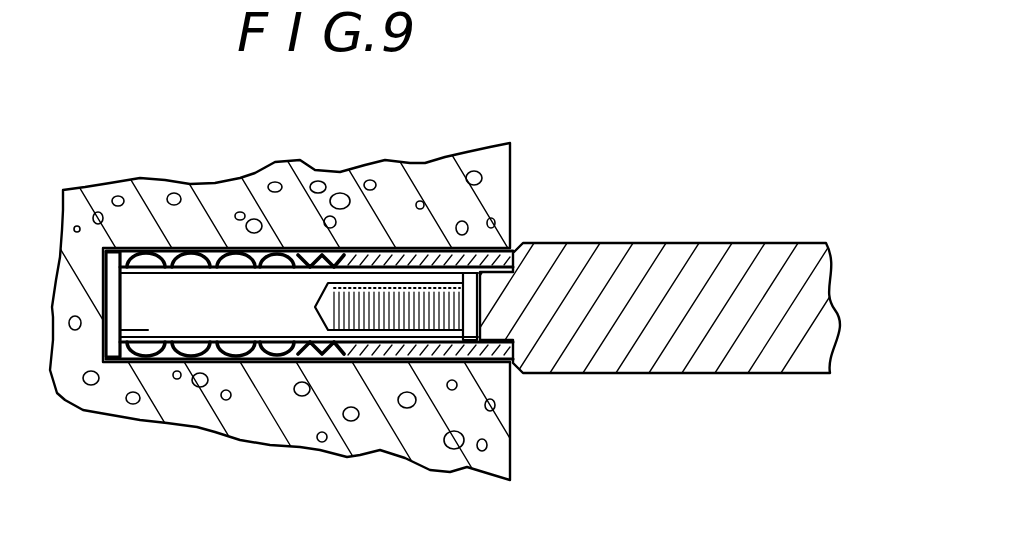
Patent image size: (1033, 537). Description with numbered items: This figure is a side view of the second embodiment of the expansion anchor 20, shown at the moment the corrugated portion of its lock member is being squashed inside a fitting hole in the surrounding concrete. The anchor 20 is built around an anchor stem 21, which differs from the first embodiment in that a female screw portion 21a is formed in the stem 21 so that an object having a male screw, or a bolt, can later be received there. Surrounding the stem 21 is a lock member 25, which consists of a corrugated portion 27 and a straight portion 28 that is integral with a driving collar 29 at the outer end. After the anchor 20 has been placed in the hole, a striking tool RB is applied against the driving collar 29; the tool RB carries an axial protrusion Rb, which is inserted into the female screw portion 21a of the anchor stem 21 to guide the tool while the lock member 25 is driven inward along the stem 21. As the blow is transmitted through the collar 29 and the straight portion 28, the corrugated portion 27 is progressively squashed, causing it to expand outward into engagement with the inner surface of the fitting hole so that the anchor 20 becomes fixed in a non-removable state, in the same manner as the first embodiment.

The expansion anchor 20 is at (332, 306).
The anchor stem 21 is at (190, 320).
The female screw portion 21a is at (375, 325).
The lock member 25 is at (281, 250).
The corrugated portion 27 is at (173, 250).
The straight portion 28 is at (462, 225).
The driving collar 29 is at (411, 247).
The axial protrusion Rb is at (492, 300).
The striking tool RB is at (605, 352).